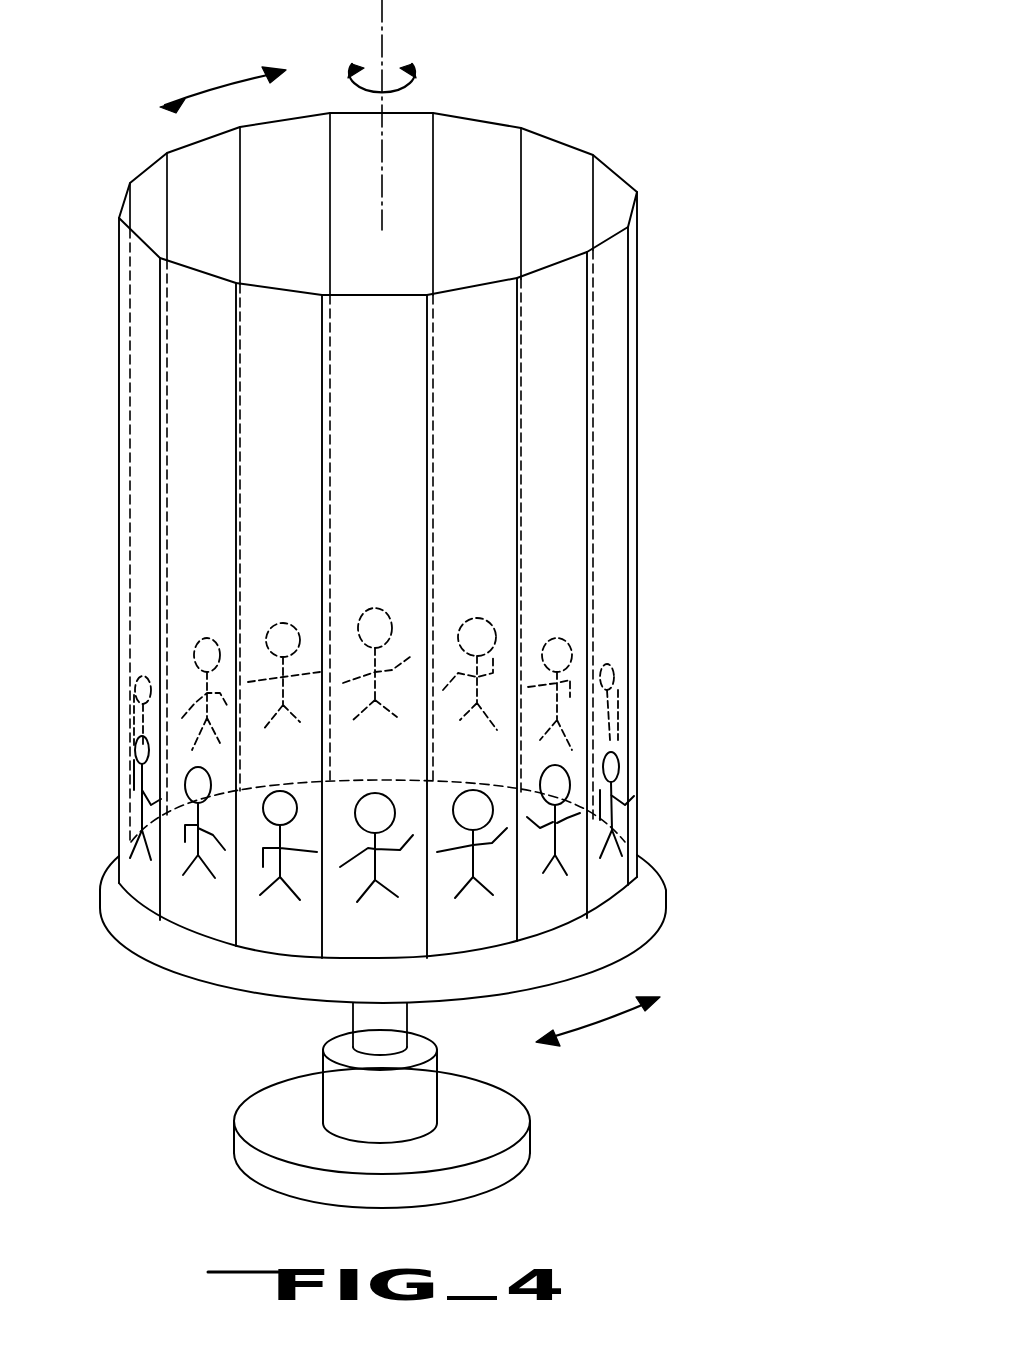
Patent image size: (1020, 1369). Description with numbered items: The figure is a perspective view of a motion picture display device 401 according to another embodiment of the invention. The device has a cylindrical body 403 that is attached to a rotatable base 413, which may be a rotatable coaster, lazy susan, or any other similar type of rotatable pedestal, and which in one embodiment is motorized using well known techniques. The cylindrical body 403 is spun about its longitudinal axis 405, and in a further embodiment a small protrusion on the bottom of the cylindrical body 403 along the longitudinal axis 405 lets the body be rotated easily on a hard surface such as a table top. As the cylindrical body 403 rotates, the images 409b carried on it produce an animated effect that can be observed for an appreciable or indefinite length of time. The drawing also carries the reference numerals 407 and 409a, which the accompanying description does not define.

The motion picture display device 401 is at (768, 27).
The cylindrical body 403 is at (551, 178).
The longitudinal axis 405 is at (386, 31).
The display panel segments 407 is at (338, 953).
The front displayed figures 409a is at (263, 888).
The animated images 409b is at (370, 612).
The rotatable base 413 is at (652, 893).